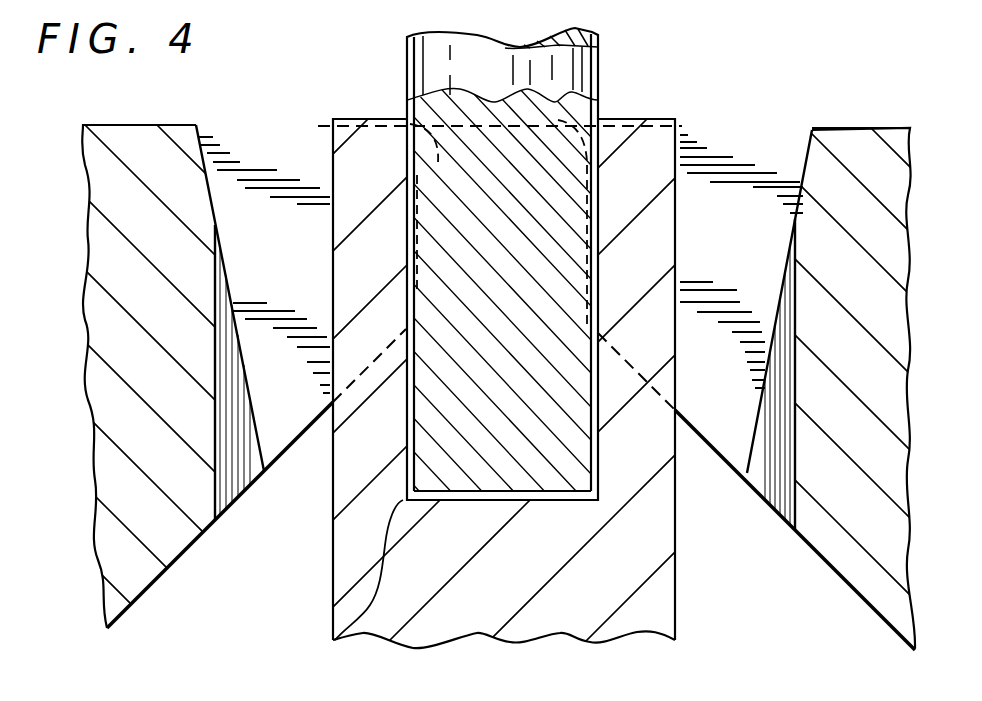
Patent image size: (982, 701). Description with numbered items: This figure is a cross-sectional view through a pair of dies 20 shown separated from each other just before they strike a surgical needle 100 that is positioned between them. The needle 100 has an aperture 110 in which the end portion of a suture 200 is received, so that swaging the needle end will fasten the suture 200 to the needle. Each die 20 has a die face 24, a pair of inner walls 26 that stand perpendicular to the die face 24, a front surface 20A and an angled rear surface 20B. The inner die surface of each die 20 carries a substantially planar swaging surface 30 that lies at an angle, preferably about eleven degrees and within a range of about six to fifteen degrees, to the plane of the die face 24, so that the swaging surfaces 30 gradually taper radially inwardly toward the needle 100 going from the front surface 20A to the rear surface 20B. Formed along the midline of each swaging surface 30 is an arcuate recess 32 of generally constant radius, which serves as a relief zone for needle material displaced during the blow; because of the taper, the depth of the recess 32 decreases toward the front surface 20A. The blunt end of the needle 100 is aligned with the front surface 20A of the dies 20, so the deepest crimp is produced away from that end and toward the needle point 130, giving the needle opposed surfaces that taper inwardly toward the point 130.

The die 20 is at (885, 122).
The front surface 20A is at (737, 128).
The angled rear surface 20B is at (698, 462).
The die face 24 is at (403, 111).
The inner walls 26 is at (728, 383).
The swaging surface 30 is at (217, 192).
The arcuate recess 32 is at (240, 495).
The surgical needle 100 is at (470, 556).
The aperture 110 is at (332, 640).
The needle point 130 is at (613, 640).
The suture 200 is at (503, 78).